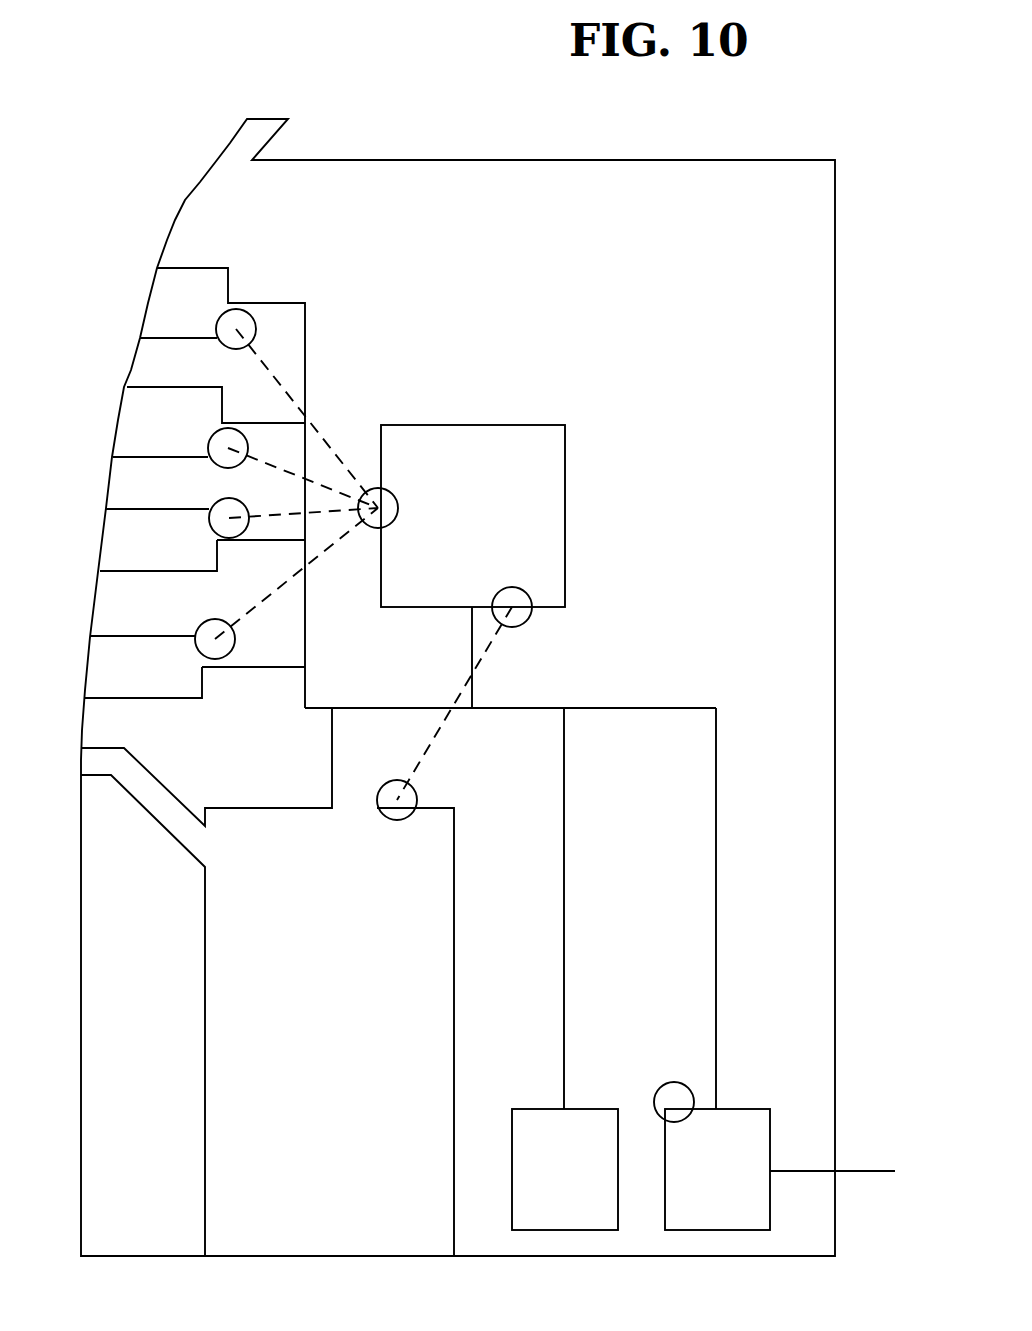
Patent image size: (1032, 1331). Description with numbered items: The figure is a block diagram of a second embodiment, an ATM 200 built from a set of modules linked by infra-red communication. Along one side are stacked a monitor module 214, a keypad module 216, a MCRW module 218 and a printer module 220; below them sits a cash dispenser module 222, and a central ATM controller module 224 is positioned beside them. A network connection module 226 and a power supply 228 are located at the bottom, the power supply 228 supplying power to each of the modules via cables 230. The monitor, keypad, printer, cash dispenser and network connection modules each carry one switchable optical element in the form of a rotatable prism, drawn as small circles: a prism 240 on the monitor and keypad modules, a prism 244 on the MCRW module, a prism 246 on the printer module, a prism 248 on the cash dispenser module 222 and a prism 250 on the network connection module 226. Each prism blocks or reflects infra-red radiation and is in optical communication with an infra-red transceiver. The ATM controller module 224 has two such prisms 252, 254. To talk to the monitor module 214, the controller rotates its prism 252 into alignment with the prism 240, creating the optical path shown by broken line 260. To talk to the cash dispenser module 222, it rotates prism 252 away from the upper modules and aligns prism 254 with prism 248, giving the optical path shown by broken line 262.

The ATM 200 is at (835, 407).
The monitor module 214 is at (155, 324).
The keypad module 216 is at (137, 421).
The MCRW module 218 is at (118, 543).
The printer module 220 is at (105, 667).
The cash dispenser module 222 is at (443, 933).
The ATM controller module 224 is at (565, 495).
The network connection module 226 is at (730, 1215).
The power supply 228 is at (564, 1215).
The cables 230 is at (678, 708).
The switchable optical element 240 is at (236, 335).
The switchable optical element 244 is at (232, 527).
The switchable optical element 246 is at (217, 647).
The switchable optical element 248 is at (402, 799).
The switchable optical element 250 is at (671, 1089).
The switchable optical element 252 is at (372, 517).
The switchable optical element 254 is at (518, 618).
The broken line 260 is at (317, 431).
The broken line 262 is at (440, 723).